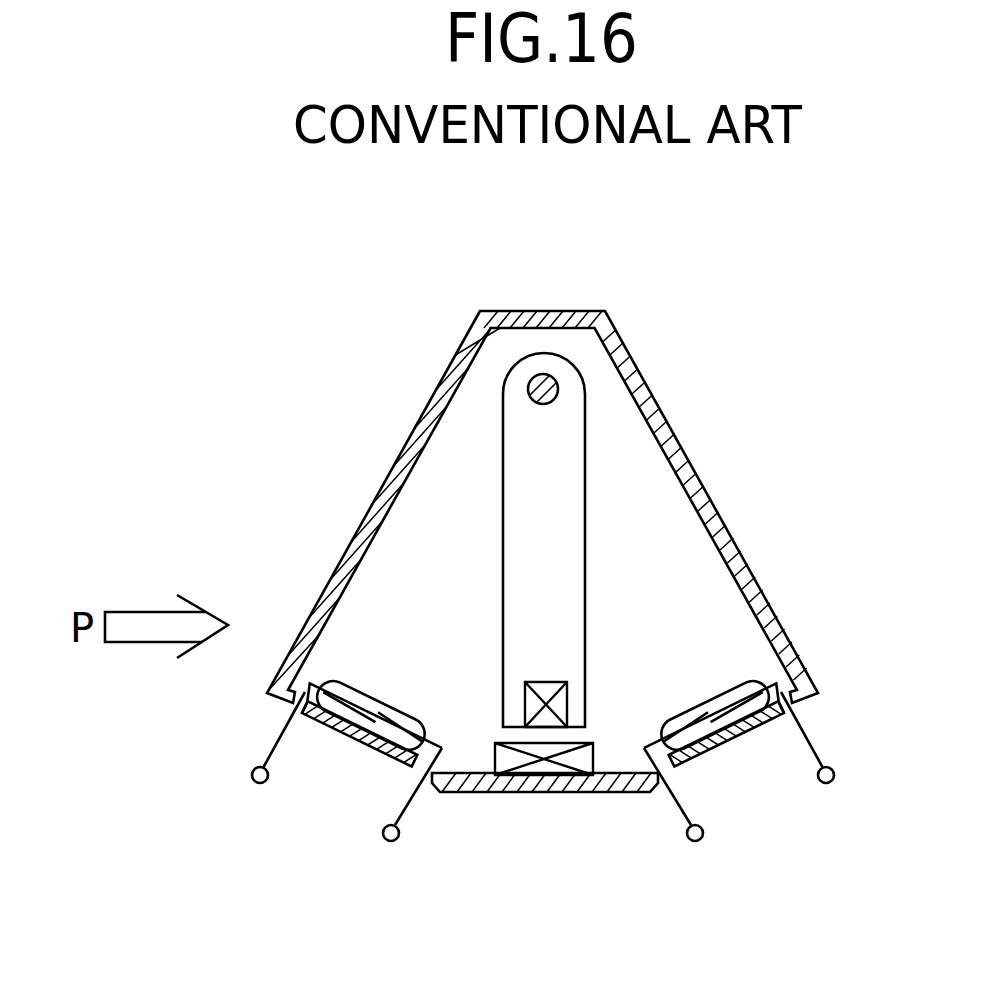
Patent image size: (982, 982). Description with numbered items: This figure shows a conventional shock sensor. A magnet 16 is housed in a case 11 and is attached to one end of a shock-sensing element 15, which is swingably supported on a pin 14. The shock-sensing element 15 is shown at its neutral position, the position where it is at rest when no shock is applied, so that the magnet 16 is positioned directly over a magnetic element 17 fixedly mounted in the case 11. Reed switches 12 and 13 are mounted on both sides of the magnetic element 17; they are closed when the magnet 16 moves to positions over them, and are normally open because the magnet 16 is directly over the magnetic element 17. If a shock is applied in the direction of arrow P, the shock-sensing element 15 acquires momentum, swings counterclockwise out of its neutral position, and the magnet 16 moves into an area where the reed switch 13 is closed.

The case 11 is at (643, 375).
The reed switch 12 is at (380, 698).
The reed switch 13 is at (683, 707).
The pin 14 is at (541, 380).
The shock-sensing element 15 is at (523, 552).
The magnet 16 is at (547, 682).
The magnetic element 17 is at (553, 772).